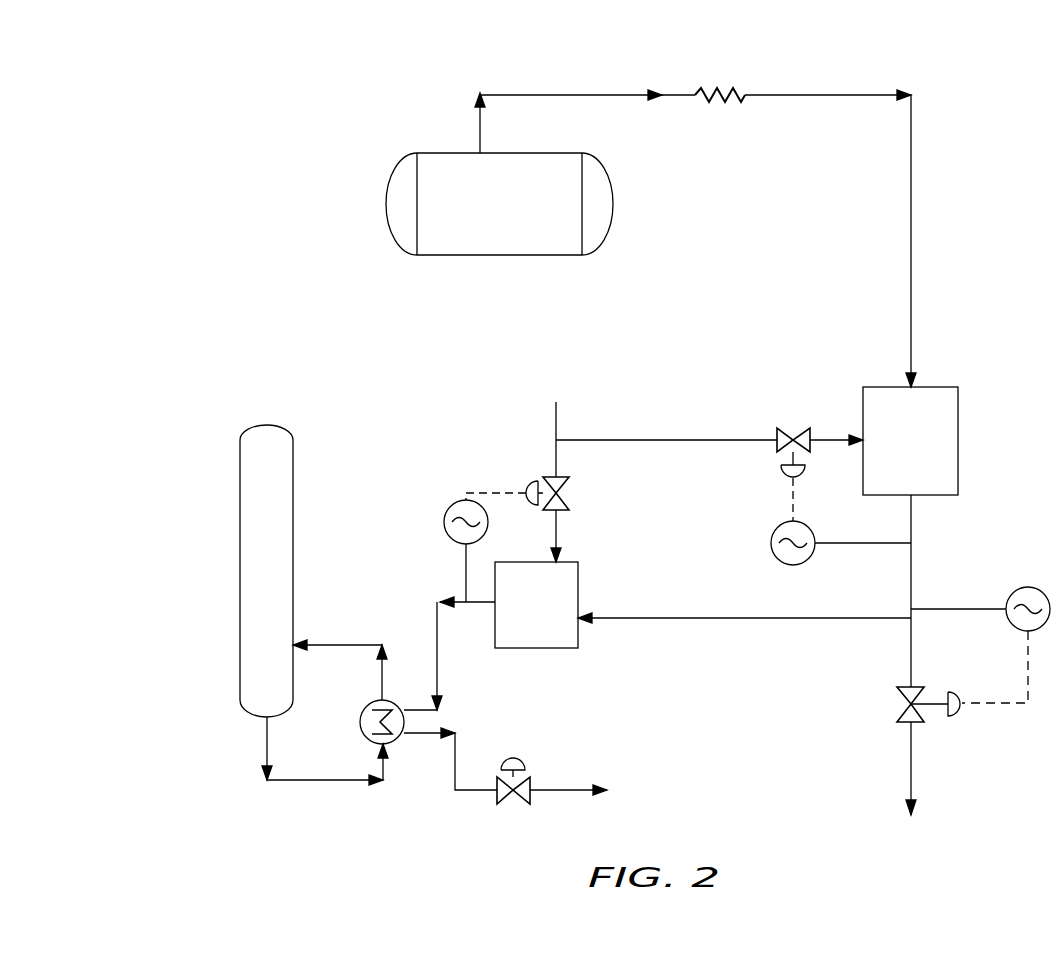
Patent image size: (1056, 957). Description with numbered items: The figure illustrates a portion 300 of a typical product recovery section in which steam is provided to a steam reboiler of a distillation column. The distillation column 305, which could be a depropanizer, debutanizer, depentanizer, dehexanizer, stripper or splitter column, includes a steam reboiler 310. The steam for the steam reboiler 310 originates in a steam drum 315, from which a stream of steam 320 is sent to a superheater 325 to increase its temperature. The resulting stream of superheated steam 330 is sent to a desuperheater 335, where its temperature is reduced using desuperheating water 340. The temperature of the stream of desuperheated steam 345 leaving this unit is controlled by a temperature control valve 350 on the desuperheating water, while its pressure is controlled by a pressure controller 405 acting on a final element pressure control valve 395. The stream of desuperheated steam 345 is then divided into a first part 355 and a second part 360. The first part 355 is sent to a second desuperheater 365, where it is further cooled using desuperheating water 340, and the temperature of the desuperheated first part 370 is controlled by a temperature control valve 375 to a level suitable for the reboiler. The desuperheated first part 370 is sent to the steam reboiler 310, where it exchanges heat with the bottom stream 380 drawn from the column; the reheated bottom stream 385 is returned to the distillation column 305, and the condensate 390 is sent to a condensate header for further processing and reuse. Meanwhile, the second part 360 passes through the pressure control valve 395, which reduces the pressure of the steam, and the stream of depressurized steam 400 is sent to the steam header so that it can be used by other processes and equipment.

The portion of a typical product recovery section 300 is at (300, 98).
The distillation column 305 is at (240, 444).
The steam reboiler 310 is at (362, 734).
The steam drum 315 is at (425, 152).
The stream of steam 320 is at (566, 92).
The superheater 325 is at (718, 87).
The stream of superheated steam 330 is at (856, 90).
The desuperheater 335 is at (960, 440).
The desuperheating water 340 is at (575, 394).
The stream of desuperheated steam 345 is at (912, 562).
The temperature control valve 350 is at (799, 425).
The first part 355 is at (737, 620).
The second part 360 is at (910, 660).
The desuperheater 365 is at (575, 562).
The desuperheated first part 370 is at (435, 614).
The temperature control valve 375 is at (534, 480).
The bottom stream 380 is at (265, 750).
The reheated bottom stream 385 is at (340, 642).
The condensate 390 is at (425, 735).
The pressure control valve 395 is at (896, 706).
The stream of depressurized steam 400 is at (910, 762).
The pressure controller 405 is at (1029, 587).